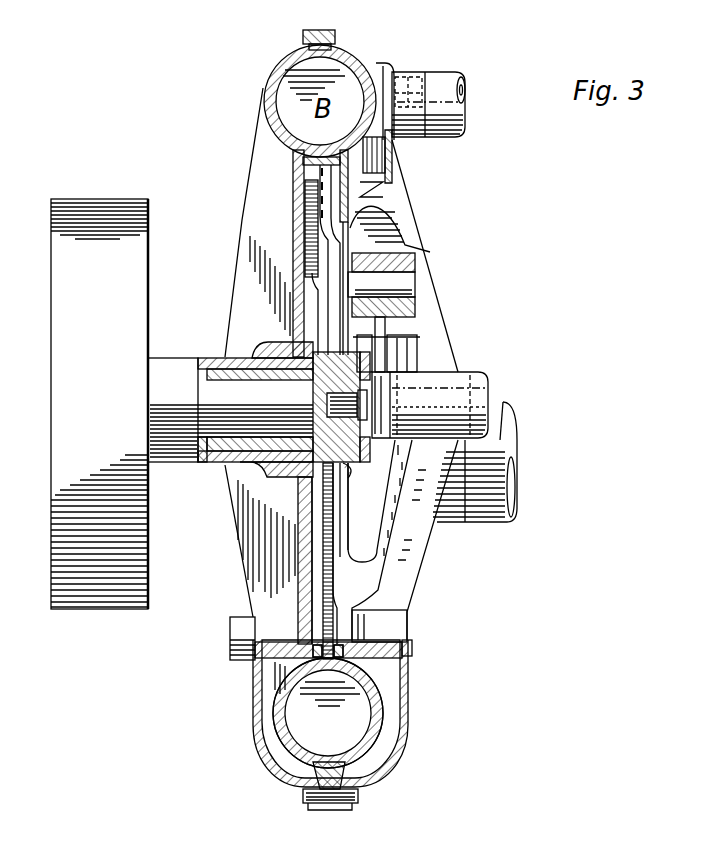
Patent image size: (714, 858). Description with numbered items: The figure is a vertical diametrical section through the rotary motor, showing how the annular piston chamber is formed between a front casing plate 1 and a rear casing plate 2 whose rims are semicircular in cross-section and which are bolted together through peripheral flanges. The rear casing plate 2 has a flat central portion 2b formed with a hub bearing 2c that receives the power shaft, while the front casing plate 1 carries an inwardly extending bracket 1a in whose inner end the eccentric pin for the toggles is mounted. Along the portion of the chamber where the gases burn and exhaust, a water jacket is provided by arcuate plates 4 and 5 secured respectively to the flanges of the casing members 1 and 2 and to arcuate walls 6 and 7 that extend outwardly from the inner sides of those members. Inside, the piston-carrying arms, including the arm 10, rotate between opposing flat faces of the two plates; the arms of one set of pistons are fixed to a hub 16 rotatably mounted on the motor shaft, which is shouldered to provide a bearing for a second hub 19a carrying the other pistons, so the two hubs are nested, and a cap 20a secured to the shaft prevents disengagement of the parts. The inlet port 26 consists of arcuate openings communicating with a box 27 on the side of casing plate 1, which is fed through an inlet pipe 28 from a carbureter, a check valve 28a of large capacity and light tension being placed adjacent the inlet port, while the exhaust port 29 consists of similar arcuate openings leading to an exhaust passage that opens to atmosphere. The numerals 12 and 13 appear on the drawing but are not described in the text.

The front casing plate 1 is at (368, 752).
The bracket 1a is at (418, 540).
The rear casing plate 2 is at (287, 743).
The flat central portion 2b is at (300, 542).
The hub bearing 2c is at (213, 463).
The arcuate plate 4 is at (400, 720).
The arcuate plate 5 is at (255, 710).
The arcuate wall 6 is at (357, 647).
The arcuate wall 7 is at (270, 647).
The arm 10 is at (313, 292).
The hub bushing 12 is at (292, 372).
The shaft 13 is at (230, 410).
The hub 16 is at (344, 492).
The hub 19a is at (352, 466).
The cap 20a is at (360, 363).
The inlet port 26 is at (363, 88).
The box 27 is at (392, 90).
The inlet pipe 28 is at (443, 82).
The check valve 28a is at (468, 100).
The exhaust port 29 is at (513, 487).